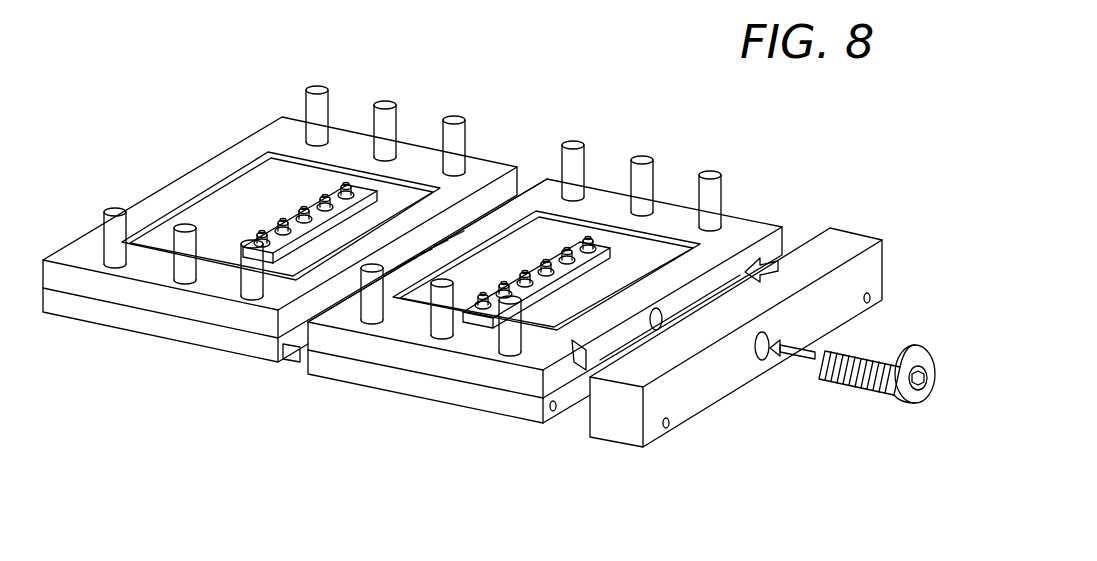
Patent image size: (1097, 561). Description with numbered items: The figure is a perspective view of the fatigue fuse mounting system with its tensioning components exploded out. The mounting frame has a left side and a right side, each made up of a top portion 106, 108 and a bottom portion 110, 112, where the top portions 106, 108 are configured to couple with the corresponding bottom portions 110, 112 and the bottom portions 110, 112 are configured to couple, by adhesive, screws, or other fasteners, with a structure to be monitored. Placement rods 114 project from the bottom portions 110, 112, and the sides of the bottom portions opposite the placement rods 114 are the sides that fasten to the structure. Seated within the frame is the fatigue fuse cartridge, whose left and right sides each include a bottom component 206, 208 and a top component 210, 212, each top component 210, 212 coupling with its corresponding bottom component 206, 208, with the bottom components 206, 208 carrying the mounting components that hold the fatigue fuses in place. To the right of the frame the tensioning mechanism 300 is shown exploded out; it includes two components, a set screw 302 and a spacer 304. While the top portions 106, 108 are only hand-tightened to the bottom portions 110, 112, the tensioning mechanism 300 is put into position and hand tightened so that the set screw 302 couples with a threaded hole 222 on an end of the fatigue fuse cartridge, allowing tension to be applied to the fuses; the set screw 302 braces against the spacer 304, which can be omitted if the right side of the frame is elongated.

The top portion 106 is at (143, 203).
The top portion 108 is at (748, 218).
The bottom portion 110 is at (90, 316).
The bottom portion 112 is at (347, 372).
The placement rods 114 is at (447, 130).
The bottom component 206 is at (200, 210).
The bottom component 208 is at (710, 292).
The top component 210 is at (253, 207).
The top component 212 is at (557, 305).
The threaded hole 222 is at (655, 328).
The tensioning mechanism 300 is at (726, 407).
The set screw 302 is at (856, 233).
The spacer 304 is at (905, 400).